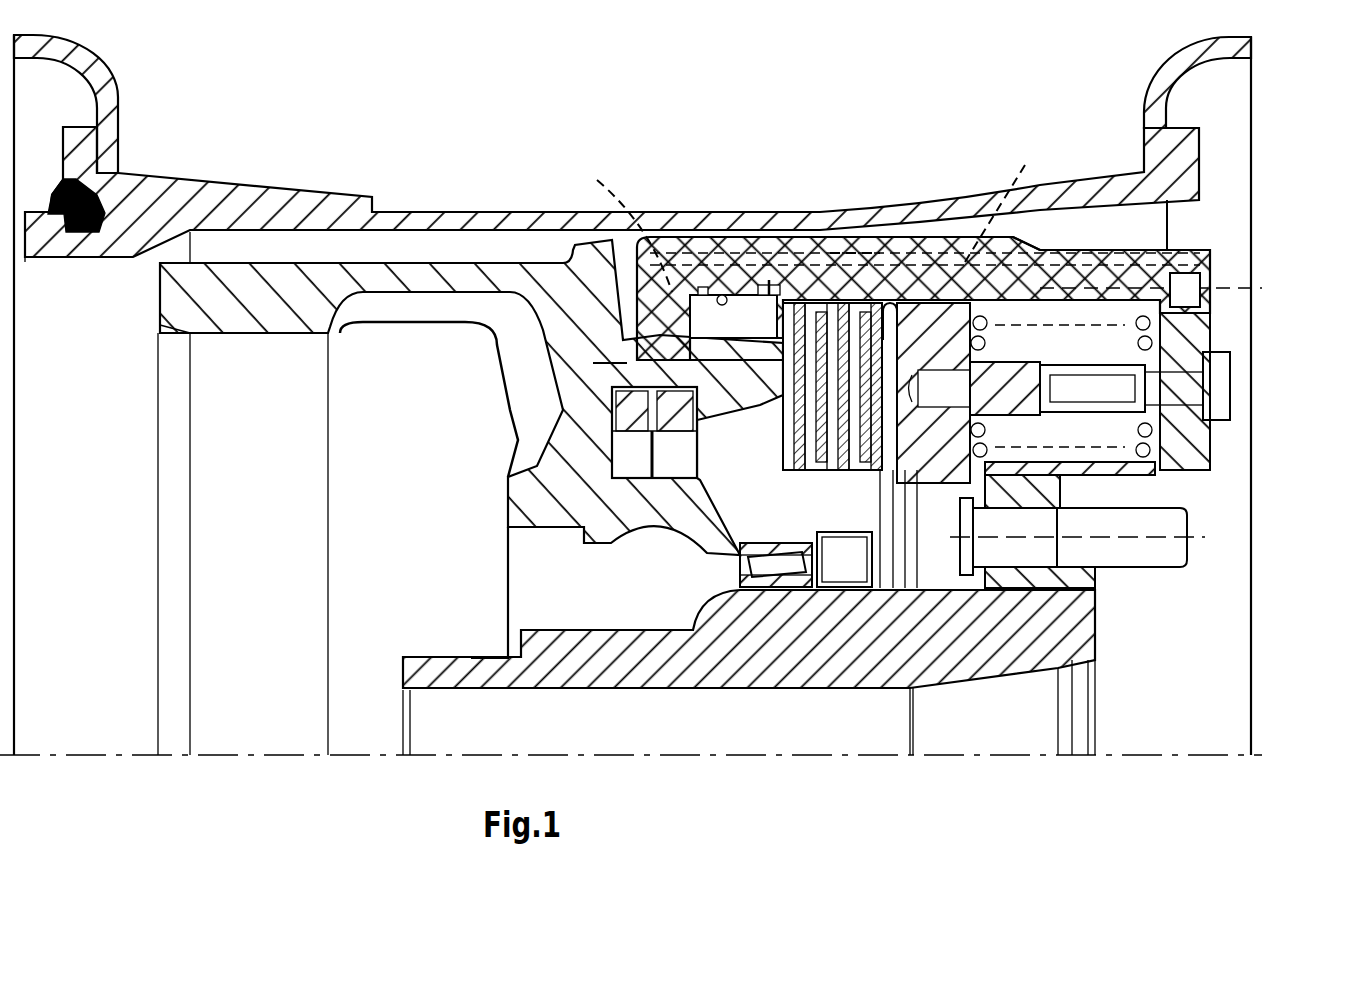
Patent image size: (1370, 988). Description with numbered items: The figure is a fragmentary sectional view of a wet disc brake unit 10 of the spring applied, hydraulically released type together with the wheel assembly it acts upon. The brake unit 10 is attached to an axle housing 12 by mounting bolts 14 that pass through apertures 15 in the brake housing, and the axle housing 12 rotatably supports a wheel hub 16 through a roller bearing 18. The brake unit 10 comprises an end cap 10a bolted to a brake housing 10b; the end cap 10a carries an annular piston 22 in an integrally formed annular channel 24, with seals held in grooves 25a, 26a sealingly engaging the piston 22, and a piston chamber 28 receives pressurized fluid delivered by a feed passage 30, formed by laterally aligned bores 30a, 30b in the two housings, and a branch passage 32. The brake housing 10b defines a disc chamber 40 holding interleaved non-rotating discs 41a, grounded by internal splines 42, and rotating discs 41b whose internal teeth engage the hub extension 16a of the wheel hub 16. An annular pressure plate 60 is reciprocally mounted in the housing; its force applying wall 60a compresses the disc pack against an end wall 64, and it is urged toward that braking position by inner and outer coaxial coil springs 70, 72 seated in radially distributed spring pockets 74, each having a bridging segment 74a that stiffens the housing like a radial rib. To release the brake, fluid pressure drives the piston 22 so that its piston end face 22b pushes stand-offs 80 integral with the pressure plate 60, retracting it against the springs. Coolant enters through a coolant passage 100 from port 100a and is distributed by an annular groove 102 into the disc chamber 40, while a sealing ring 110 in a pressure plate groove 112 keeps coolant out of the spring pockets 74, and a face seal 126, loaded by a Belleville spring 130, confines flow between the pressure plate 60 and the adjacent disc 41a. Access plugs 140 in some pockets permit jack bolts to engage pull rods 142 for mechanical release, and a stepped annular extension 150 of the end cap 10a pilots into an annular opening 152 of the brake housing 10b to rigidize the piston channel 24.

The wet disc brake unit 10 is at (1300, 310).
The end cap 10a is at (700, 298).
The brake housing 10b is at (855, 308).
The axle housing 12 is at (809, 672).
The mounting bolts 14 is at (1120, 570).
The apertures 15 is at (1015, 585).
The wheel hub 16 is at (440, 385).
The hub extension 16a is at (611, 512).
The roller bearing 18 is at (770, 572).
The annular piston 22 is at (736, 327).
The piston end face 22b is at (676, 432).
The annular channel 24 is at (703, 288).
The groove 25a is at (660, 372).
The groove 26a is at (722, 296).
The piston chamber 28 is at (705, 325).
The feed passage 30 is at (1210, 235).
The bore 30a is at (613, 225).
The bore 30b is at (1011, 201).
The branch passage 32 is at (645, 228).
The disc chamber 40 is at (890, 300).
The non-rotating brake discs 41a is at (850, 458).
The rotating brake discs 41b is at (790, 458).
The internal splines 42 is at (850, 300).
The pressure plate 60 is at (990, 428).
The force applying wall 60a is at (933, 393).
The end wall 64 is at (669, 454).
The spring 70 is at (1203, 250).
The spring 72 is at (1155, 432).
The spring pockets 74 is at (1180, 390).
The bridging segment 74a is at (1160, 350).
The stand-offs 80 is at (900, 305).
The coolant passage 100 is at (1100, 290).
The port 100a is at (1197, 285).
The annular groove 102 is at (960, 285).
The annular sealing ring 110 is at (1040, 252).
The pressure plate groove 112 is at (1010, 348).
The annular seal 126 is at (898, 475).
The Belleville spring 130 is at (975, 515).
The access plug 140 is at (1220, 380).
The pull rods 142 is at (1130, 452).
The annular extension 150 is at (772, 293).
The annular opening 152 is at (770, 282).